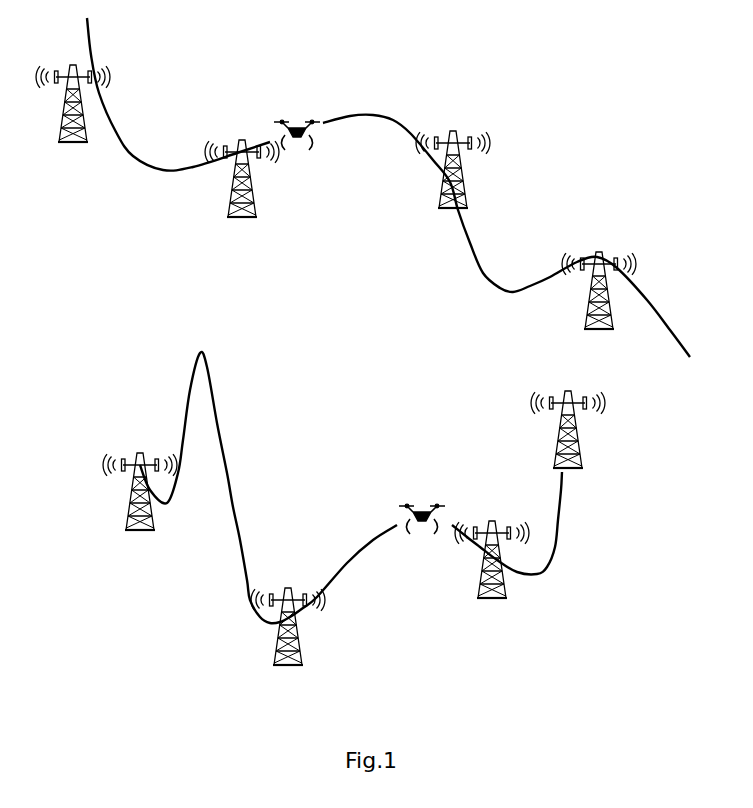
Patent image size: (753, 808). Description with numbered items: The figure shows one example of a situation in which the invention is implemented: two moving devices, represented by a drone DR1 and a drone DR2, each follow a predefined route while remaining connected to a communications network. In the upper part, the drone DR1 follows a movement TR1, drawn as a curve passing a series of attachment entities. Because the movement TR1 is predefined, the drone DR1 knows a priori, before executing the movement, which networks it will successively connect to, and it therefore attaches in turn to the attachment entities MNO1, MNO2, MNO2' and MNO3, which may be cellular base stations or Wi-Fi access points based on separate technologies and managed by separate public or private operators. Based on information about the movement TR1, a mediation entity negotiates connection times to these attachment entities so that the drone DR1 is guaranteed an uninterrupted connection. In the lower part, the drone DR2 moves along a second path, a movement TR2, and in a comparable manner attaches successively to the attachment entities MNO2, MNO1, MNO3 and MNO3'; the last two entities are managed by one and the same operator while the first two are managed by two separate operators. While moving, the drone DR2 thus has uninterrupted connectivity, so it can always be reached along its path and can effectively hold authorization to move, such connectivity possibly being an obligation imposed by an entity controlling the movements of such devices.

The attachment entity MNO1 is at (183, 379).
The attachment entity MNO2 is at (190, 353).
The attachment entity MNO2' is at (437, 189).
The attachment entity MNO3 is at (545, 443).
The attachment entity MNO3' is at (585, 446).
The movement TR1 is at (169, 167).
The movement TR2 is at (222, 455).
The drone DR1 is at (306, 118).
The drone DR2 is at (433, 501).